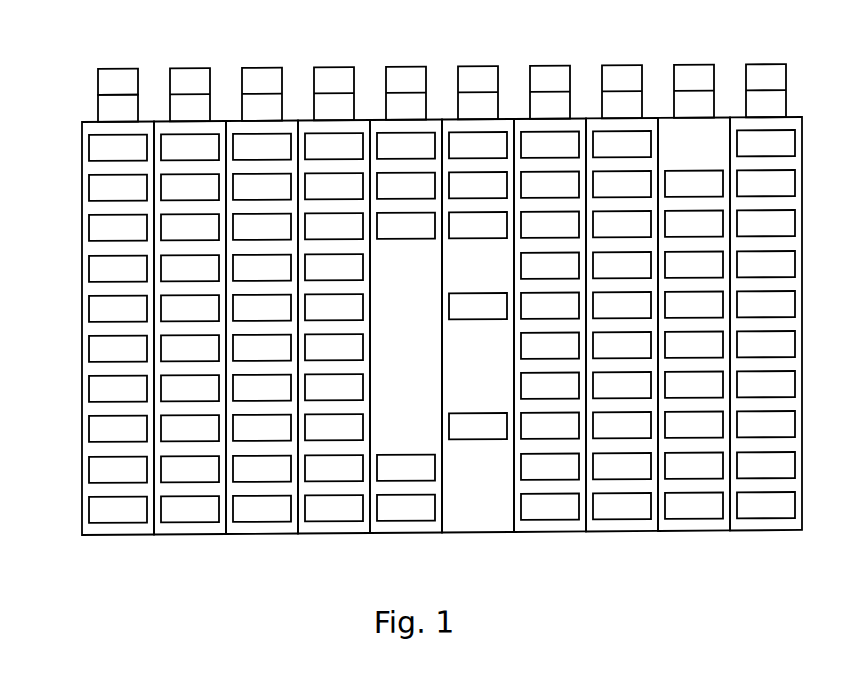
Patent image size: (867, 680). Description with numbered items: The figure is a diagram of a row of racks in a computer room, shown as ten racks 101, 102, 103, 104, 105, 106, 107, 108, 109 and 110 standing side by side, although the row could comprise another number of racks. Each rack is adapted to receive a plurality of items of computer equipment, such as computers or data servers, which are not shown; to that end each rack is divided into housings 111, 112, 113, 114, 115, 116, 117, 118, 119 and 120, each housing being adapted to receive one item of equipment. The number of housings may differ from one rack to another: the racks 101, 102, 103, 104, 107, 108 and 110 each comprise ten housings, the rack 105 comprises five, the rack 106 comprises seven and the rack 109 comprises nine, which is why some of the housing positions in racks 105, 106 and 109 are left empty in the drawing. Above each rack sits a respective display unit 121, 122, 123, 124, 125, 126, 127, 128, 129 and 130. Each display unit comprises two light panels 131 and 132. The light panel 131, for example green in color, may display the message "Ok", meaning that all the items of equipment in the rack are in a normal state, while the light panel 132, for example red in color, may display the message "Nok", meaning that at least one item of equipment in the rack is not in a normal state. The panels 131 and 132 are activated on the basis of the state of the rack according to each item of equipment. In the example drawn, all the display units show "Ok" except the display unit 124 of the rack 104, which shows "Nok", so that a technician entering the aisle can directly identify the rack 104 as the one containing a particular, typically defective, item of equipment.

The rack 101 is at (117, 535).
The rack 102 is at (188, 535).
The rack 103 is at (259, 535).
The rack 104 is at (330, 535).
The rack 105 is at (401, 535).
The rack 106 is at (472, 535).
The rack 107 is at (544, 535).
The rack 108 is at (615, 535).
The rack 109 is at (686, 535).
The rack 110 is at (757, 535).
The housing 111 is at (96, 147).
The housing 112 is at (96, 188).
The housing 113 is at (96, 229).
The housing 114 is at (96, 270).
The housing 115 is at (96, 311).
The housing 116 is at (96, 352).
The housing 117 is at (96, 393).
The housing 118 is at (96, 434).
The housing 119 is at (96, 475).
The housing 120 is at (96, 516).
The display unit 121 is at (82, 70).
The display unit 122 is at (190, 68).
The display unit 123 is at (262, 68).
The display unit 124 is at (334, 68).
The display unit 125 is at (406, 68).
The display unit 126 is at (478, 68).
The display unit 127 is at (550, 68).
The display unit 128 is at (622, 68).
The display unit 129 is at (694, 68).
The display unit 130 is at (766, 68).
The light panel 131 is at (100, 108).
The light panel 132 is at (107, 82).